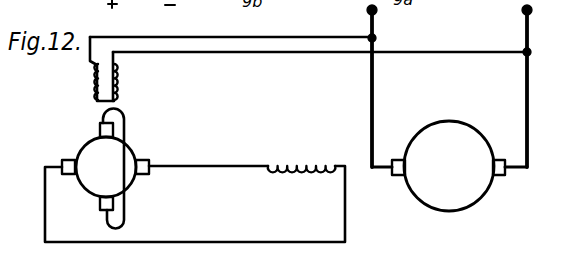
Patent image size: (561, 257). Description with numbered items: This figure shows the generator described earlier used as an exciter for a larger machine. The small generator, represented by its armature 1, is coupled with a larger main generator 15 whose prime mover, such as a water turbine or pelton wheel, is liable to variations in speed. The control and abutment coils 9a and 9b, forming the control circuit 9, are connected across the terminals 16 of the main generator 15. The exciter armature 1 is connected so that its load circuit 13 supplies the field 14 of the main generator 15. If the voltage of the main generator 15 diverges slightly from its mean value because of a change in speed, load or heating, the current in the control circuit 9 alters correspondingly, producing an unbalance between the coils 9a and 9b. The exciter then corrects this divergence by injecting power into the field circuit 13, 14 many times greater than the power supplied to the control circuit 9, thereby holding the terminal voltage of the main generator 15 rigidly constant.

The armature 1 is at (105, 169).
The control circuit 9 is at (308, 45).
The control winding 9a is at (120, 79).
The control winding 9b is at (96, 78).
The load circuit 13 is at (195, 194).
The field 14 is at (301, 165).
The main generator 15 is at (449, 166).
The terminals 16 is at (523, 12).